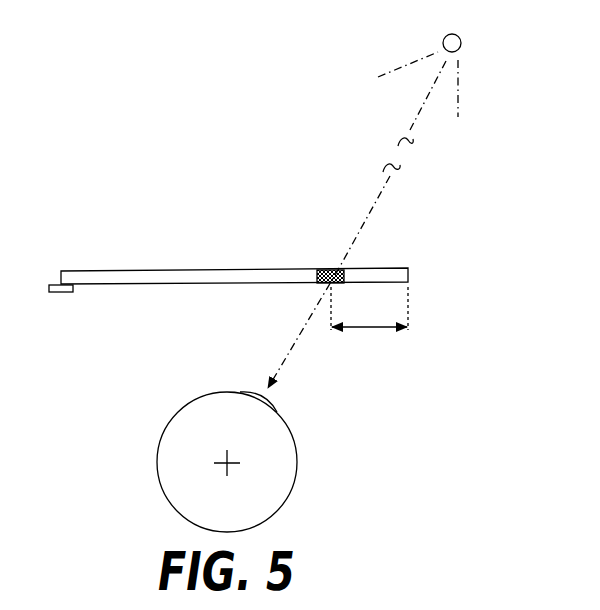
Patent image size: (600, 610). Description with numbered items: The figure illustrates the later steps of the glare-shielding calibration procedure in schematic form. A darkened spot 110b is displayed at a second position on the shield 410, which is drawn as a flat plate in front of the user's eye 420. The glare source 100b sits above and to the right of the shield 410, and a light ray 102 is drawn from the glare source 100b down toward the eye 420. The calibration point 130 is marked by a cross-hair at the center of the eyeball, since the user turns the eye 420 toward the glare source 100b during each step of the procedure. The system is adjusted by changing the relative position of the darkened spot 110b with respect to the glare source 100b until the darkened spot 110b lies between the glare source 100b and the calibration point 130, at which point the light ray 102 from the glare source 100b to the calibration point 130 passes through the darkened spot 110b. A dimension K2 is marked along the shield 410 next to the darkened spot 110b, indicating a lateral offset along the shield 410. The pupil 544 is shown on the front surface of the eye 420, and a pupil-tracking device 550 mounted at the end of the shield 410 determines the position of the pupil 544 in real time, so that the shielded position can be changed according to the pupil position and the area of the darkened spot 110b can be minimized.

The glare source 100b is at (461, 41).
The light ray 102 is at (368, 205).
The shield 410 is at (163, 270).
The pupil-tracking device 550 is at (58, 295).
The darkened spot 110b is at (325, 270).
The distance K2 is at (369, 319).
The eye 420 is at (168, 423).
The pupil 544 is at (242, 392).
The calibration point 130 is at (245, 454).